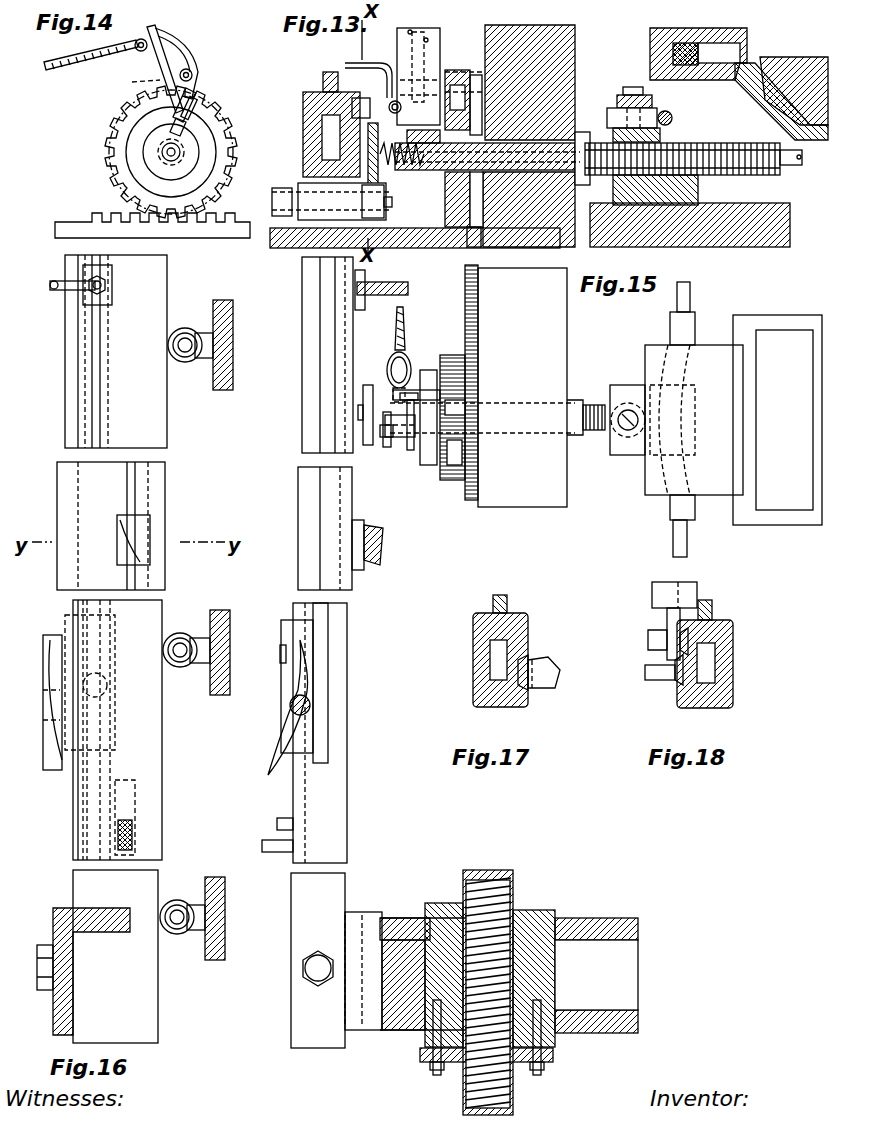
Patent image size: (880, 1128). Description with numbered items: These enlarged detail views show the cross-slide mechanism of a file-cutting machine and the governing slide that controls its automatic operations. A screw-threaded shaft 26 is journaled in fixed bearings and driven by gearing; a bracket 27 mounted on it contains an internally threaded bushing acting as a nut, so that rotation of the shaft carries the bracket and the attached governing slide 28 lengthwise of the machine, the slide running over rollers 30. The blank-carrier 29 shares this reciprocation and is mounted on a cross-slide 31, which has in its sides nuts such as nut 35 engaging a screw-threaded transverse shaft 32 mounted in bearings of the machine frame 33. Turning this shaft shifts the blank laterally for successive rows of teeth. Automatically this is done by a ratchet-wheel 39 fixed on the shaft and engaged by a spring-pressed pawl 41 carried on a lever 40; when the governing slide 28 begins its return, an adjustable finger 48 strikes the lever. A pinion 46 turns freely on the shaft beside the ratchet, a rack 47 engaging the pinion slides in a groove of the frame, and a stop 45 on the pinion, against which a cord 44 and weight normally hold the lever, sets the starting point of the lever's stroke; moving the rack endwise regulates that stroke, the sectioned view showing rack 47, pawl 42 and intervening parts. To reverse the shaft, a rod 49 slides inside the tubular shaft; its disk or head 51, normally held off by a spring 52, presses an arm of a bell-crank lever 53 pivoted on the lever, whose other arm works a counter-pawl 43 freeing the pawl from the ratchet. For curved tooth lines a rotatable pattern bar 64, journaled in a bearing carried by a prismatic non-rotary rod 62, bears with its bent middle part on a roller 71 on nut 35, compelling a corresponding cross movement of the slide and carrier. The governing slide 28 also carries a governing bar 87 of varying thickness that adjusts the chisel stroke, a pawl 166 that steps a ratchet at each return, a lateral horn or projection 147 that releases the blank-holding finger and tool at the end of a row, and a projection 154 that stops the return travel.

In FIG. 16, the screw-threaded shaft 26 is at (512, 895).
In FIG. 16, the bracket 27 is at (53, 916).
In FIG. 13, the governing slide 28 is at (303, 100).
In FIG. 15, the governing slide 28 is at (312, 360).
In FIG. 16, the governing slide 28 is at (219, 651).
In FIG. 17, the governing slide 28 is at (473, 646).
In FIG. 18, the governing slide 28 is at (733, 655).
In FIG. 13, the blank-carrier 29 is at (780, 70).
In FIG. 15, the blank-carrier 29 is at (768, 318).
In FIG. 13, the rollers 30 is at (332, 201).
In FIG. 16, the rollers 30 is at (185, 362).
In FIG. 13, the cross-slide 31 is at (650, 58).
In FIG. 15, the cross-slide 31 is at (694, 420).
In FIG. 13, the screw-threaded transverse shaft 32 is at (740, 170).
In FIG. 15, the screw-threaded transverse shaft 32 is at (590, 405).
In FIG. 13, the machine frame 33 is at (529, 136).
In FIG. 15, the machine frame 33 is at (522, 387).
In FIG. 13, the nut 35 is at (655, 190).
In FIG. 15, the nut 35 is at (628, 403).
In FIG. 14, the ratchet-wheel 39 is at (228, 137).
In FIG. 13, the ratchet-wheel 39 is at (445, 208).
In FIG. 15, the ratchet-wheel 39 is at (456, 480).
In FIG. 14, the lever 40 is at (160, 62).
In FIG. 13, the lever 40 is at (432, 28).
In FIG. 15, the lever 40 is at (426, 370).
In FIG. 14, the pawl 41 is at (208, 101).
In FIG. 13, the pawl 41 is at (460, 75).
In FIG. 15, the pawl 41 is at (468, 445).
In FIG. 14, the pawl 42 is at (192, 60).
In FIG. 13, the pawl 42 is at (400, 70).
In FIG. 15, the pawl 42 is at (410, 450).
In FIG. 14, the counter-pawl 43 is at (200, 86).
In FIG. 13, the counter-pawl 43 is at (378, 135).
In FIG. 15, the counter-pawl 43 is at (400, 437).
In FIG. 14, the cord 44 is at (89, 70).
In FIG. 15, the cord 44 is at (397, 328).
In FIG. 14, the stop 45 is at (135, 84).
In FIG. 13, the stop 45 is at (448, 75).
In FIG. 15, the stop 45 is at (456, 396).
In FIG. 14, the pinion 46 is at (108, 164).
In FIG. 13, the pinion 46 is at (470, 98).
In FIG. 15, the pinion 46 is at (468, 422).
In FIG. 14, the rack 47 is at (192, 230).
In FIG. 13, the rack 47 is at (481, 238).
In FIG. 15, the rack 47 is at (465, 296).
In FIG. 13, the finger 48 is at (354, 72).
In FIG. 15, the finger 48 is at (395, 288).
In FIG. 16, the finger 48 is at (55, 282).
In FIG. 14, the rod 49 is at (166, 150).
In FIG. 13, the rod 49 is at (497, 168).
In FIG. 14, the disk or head 51 is at (190, 168).
In FIG. 15, the disk or head 51 is at (368, 385).
In FIG. 13, the spring 52 is at (404, 168).
In FIG. 14, the bell-crank lever 53 is at (186, 122).
In FIG. 13, the bell-crank lever 53 is at (395, 112).
In FIG. 15, the bell-crank lever 53 is at (384, 440).
In FIG. 13, the prismatic non-rotary rod 62 is at (688, 43).
In FIG. 15, the prismatic non-rotary rod 62 is at (670, 322).
In FIG. 13, the rotatable pattern bar 64 is at (672, 118).
In FIG. 15, the rotatable pattern bar 64 is at (690, 300).
In FIG. 13, the roller 71 is at (607, 116).
In FIG. 15, the roller 71 is at (622, 430).
In FIG. 13, the governing bar 87 is at (323, 76).
In FIG. 15, the governing bar 87 is at (325, 298).
In FIG. 16, the governing bar 87 is at (68, 348).
In FIG. 17, the governing bar 87 is at (507, 602).
In FIG. 18, the governing bar 87 is at (712, 604).
In FIG. 15, the lateral horn or projection 147 is at (370, 565).
In FIG. 16, the lateral horn or projection 147 is at (140, 528).
In FIG. 17, the lateral horn or projection 147 is at (550, 672).
In FIG. 16, the projection 154 is at (135, 838).
In FIG. 18, the projection 154 is at (650, 675).
In FIG. 16, the pawl 166 is at (50, 770).
In FIG. 18, the pawl 166 is at (652, 589).